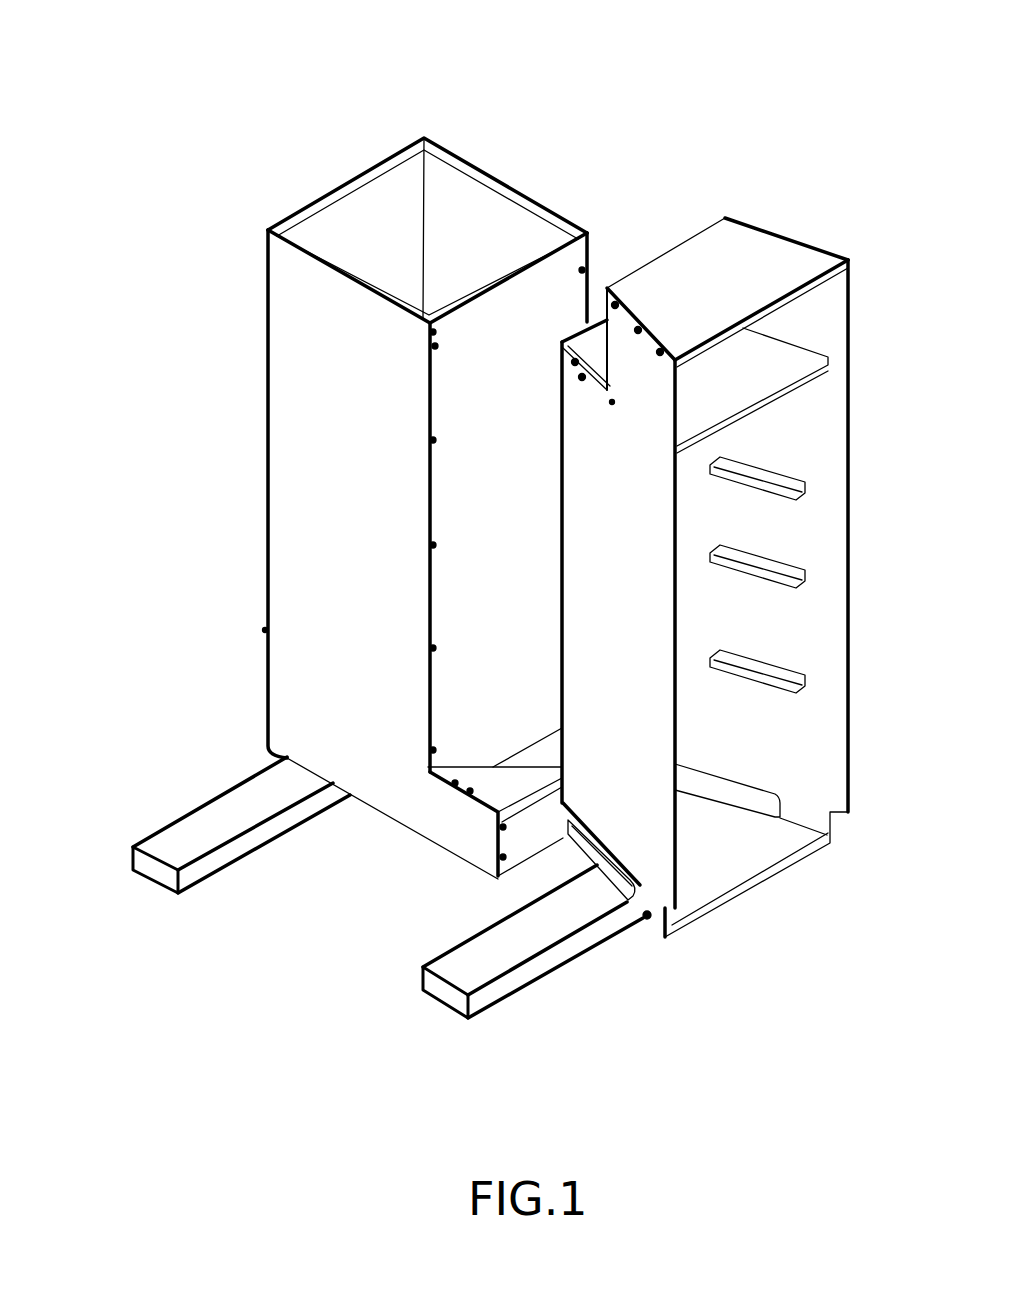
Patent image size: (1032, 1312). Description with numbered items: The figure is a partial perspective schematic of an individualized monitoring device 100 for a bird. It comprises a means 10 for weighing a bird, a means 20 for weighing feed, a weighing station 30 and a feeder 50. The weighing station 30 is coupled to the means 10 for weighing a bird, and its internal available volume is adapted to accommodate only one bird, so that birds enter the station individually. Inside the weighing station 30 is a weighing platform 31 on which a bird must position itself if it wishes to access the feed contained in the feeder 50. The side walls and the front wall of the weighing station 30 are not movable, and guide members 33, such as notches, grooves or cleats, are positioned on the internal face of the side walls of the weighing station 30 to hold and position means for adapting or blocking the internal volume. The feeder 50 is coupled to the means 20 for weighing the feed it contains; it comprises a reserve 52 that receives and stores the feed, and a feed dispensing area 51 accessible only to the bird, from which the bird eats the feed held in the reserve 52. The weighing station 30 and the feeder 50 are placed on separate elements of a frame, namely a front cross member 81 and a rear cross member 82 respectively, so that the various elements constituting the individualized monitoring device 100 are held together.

The individualized monitoring device 100 is at (183, 142).
The feeder 50 is at (543, 123).
The reserve 52 is at (280, 434).
The feed dispensing area 51 is at (482, 827).
The means for weighing feed 20 is at (287, 758).
The weighing station 30 is at (820, 172).
The weighing platform 31 is at (740, 862).
The guide members 33 is at (808, 490).
The means for weighing a bird 10 is at (617, 895).
The front cross member 81 is at (475, 1000).
The rear cross member 82 is at (202, 873).